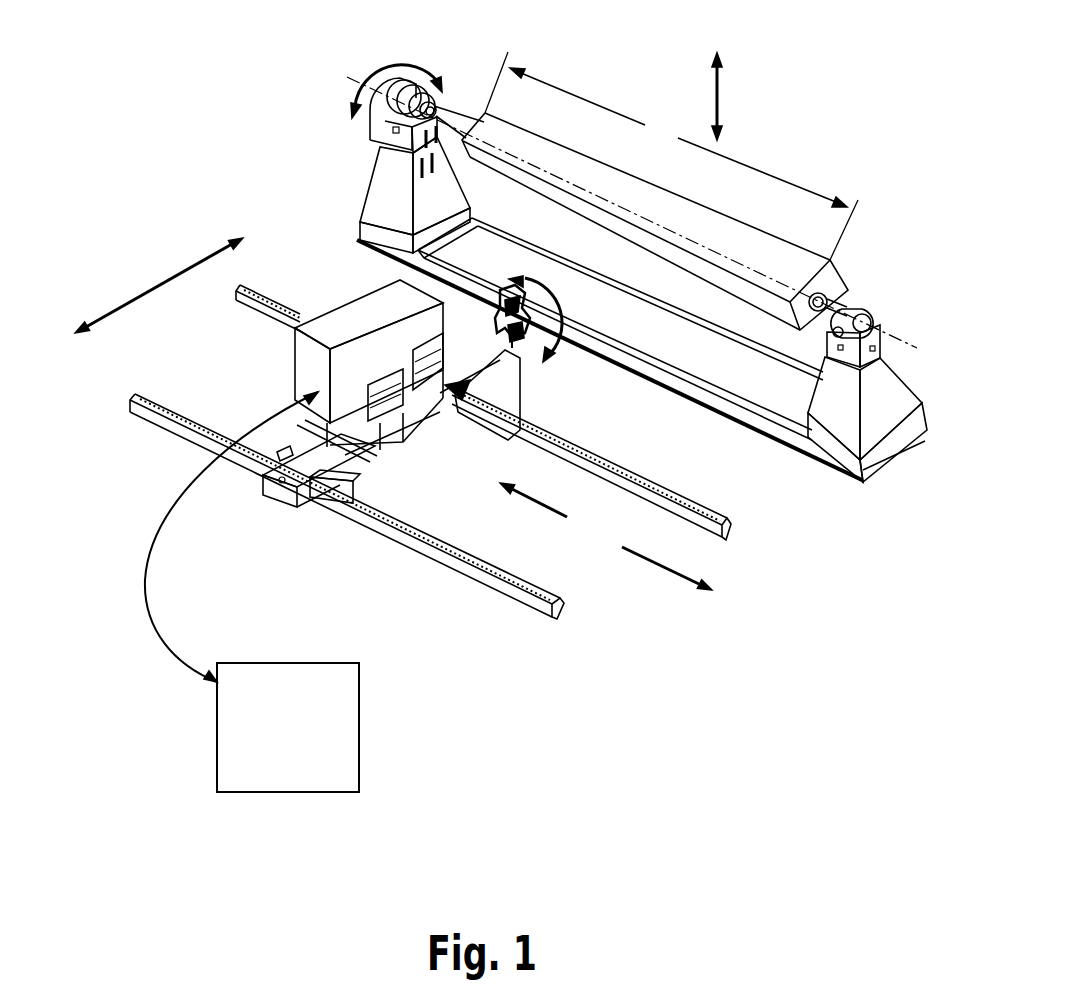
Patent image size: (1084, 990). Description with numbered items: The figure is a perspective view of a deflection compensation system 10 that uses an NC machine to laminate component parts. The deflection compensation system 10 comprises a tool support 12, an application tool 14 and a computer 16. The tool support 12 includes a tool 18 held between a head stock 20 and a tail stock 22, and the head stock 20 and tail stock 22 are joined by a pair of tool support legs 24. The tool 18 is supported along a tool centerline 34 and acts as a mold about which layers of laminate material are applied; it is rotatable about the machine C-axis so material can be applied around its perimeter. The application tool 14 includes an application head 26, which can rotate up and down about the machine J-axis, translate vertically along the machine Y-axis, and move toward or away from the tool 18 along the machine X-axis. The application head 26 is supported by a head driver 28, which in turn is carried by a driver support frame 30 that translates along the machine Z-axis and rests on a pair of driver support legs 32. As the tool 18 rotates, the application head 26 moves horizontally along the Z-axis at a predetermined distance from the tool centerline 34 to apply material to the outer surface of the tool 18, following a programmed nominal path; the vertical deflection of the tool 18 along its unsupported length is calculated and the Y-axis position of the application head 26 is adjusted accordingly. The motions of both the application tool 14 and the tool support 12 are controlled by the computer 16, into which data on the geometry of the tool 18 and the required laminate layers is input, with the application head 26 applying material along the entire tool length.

The deflection compensation system 10 is at (203, 162).
The tool support 12 is at (340, 99).
The application tool 14 is at (95, 247).
The computer 16 is at (347, 715).
The tool 18 is at (508, 143).
The head stock 20 is at (383, 170).
The tail stock 22 is at (875, 415).
The tool support legs 24 is at (670, 320).
The application head 26 is at (430, 280).
The head driver 28 is at (335, 490).
The driver support frame 30 is at (298, 470).
The driver support legs 32 is at (703, 512).
The tool centerline 34 is at (340, 67).